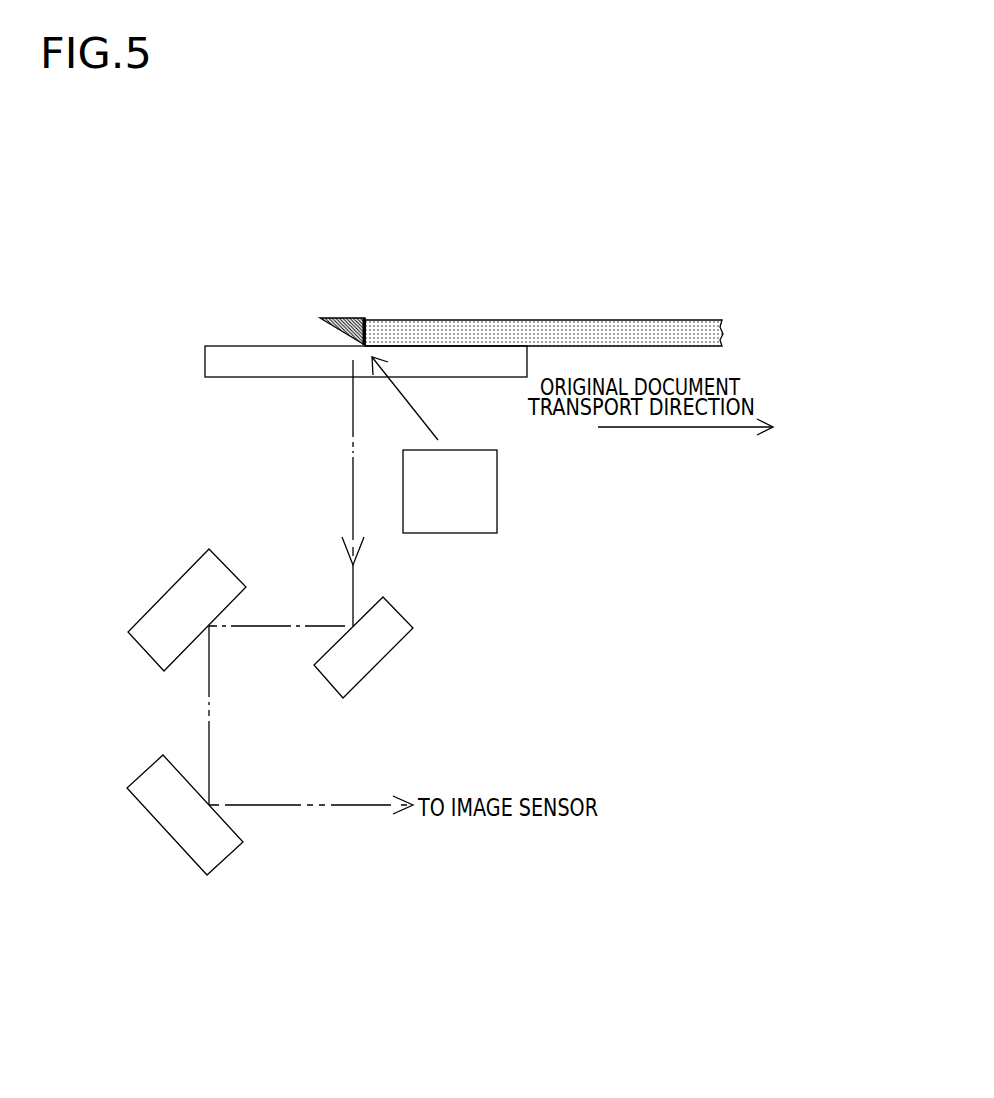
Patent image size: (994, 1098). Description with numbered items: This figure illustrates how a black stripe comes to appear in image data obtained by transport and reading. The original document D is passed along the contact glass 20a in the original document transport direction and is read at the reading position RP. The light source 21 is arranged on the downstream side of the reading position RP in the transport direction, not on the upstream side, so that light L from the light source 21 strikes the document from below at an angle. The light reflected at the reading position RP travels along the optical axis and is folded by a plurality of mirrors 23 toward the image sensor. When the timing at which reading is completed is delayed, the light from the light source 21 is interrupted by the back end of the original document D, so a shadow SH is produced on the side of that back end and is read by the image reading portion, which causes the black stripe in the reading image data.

The contact glass 20a is at (230, 354).
The light source 21 is at (483, 487).
The mirror 23 is at (205, 573).
The shadow SH is at (338, 318).
The original document D is at (513, 318).
The reading position RP is at (352, 315).
The light L is at (405, 398).